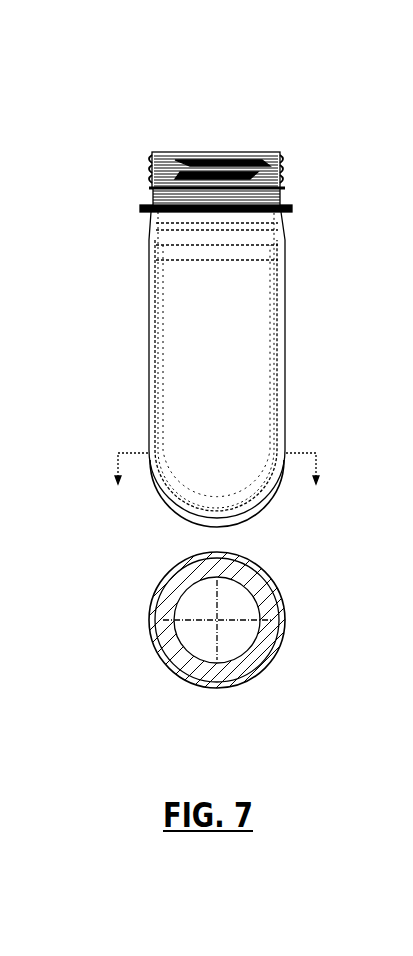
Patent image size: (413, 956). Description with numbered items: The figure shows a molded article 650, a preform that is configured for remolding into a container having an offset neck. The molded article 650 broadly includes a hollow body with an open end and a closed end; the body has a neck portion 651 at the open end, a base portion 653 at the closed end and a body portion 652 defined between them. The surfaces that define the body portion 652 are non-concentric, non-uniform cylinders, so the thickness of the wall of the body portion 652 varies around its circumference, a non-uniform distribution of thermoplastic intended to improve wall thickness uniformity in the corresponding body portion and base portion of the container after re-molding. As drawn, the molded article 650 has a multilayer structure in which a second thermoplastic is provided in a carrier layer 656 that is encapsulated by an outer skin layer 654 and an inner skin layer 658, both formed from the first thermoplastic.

The molded article 650 is at (128, 151).
The neck portion 651 is at (288, 188).
The body portion 652 is at (291, 363).
The base portion 653 is at (283, 493).
The outer skin layer 654 is at (149, 372).
The carrier layer 656 is at (148, 402).
The inner skin layer 658 is at (158, 384).